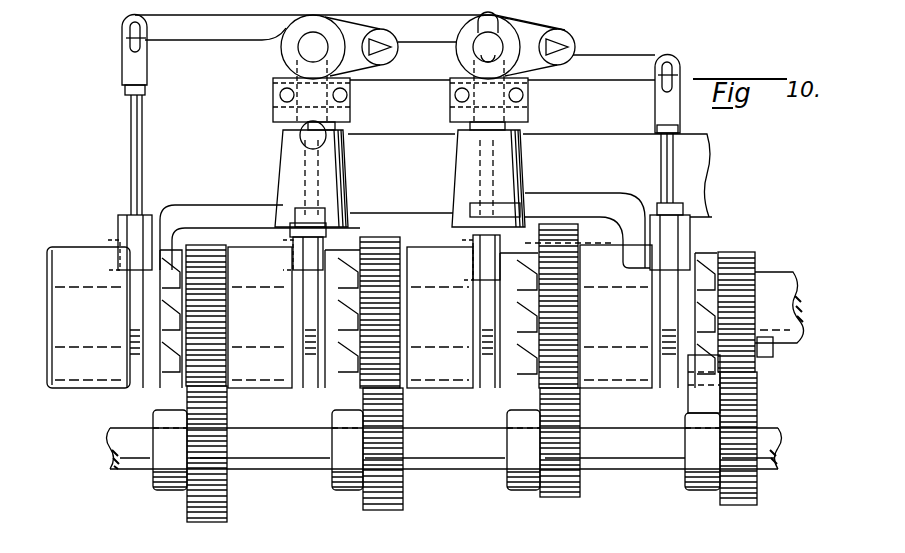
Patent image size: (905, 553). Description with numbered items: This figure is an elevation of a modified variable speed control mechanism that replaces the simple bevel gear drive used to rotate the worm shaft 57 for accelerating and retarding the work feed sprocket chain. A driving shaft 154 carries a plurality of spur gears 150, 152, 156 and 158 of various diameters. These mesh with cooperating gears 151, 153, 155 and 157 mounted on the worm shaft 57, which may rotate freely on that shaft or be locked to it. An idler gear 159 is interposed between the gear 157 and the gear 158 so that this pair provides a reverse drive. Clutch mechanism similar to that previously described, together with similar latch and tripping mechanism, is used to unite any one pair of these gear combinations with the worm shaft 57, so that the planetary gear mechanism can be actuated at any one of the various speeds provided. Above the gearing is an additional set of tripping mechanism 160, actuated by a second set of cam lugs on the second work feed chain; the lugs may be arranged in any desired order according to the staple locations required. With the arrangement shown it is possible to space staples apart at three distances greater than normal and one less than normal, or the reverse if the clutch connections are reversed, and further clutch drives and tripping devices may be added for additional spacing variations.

The worm shaft 57 is at (808, 300).
The spur gear 150 is at (212, 514).
The cooperating gear 151 is at (214, 250).
The spur gear 152 is at (392, 504).
The cooperating gear 153 is at (386, 237).
The driving shaft 154 is at (452, 457).
The cooperating gear 155 is at (570, 249).
The spur gear 156 is at (575, 489).
The cooperating gear 157 is at (736, 252).
The spur gear 158 is at (740, 500).
The idler gear 159 is at (760, 338).
The tripping mechanism 160 is at (249, 58).